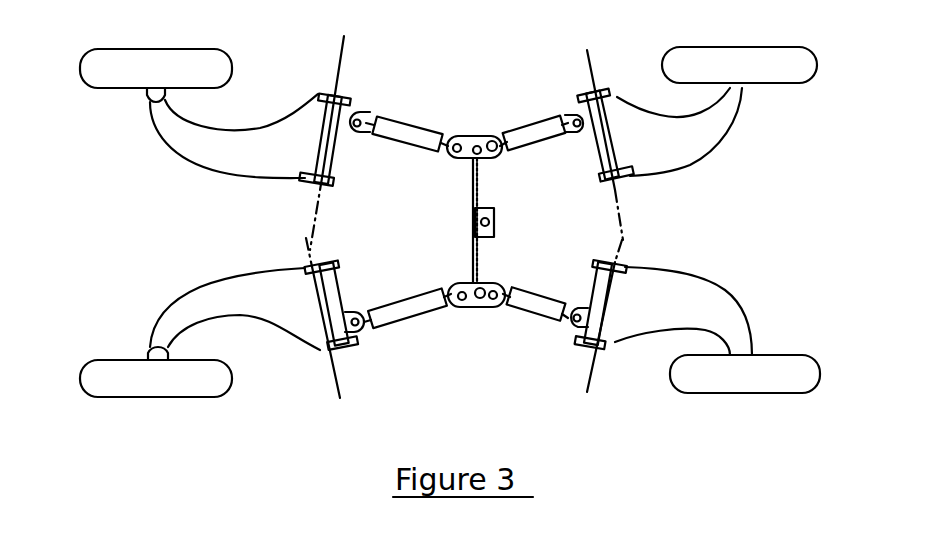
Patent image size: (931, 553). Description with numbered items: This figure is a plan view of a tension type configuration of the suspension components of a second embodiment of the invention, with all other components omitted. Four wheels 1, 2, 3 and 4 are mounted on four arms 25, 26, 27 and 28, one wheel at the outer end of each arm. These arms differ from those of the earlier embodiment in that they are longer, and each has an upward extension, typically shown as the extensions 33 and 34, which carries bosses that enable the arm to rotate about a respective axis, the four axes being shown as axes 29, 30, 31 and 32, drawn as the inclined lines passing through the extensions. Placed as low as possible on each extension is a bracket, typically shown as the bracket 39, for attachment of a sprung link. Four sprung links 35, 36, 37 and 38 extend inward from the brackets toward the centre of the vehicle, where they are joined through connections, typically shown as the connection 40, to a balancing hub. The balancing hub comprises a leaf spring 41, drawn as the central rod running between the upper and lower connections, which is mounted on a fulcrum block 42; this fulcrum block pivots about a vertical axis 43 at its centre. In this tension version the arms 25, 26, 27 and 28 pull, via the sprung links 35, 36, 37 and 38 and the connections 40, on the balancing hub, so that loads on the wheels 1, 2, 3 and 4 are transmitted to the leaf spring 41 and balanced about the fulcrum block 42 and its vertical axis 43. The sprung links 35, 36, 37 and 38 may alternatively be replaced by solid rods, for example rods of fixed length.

The wheel 1 is at (90, 372).
The wheel 2 is at (90, 57).
The wheel 3 is at (793, 55).
The wheel 4 is at (810, 372).
The arm 25 is at (198, 295).
The arm 26 is at (223, 137).
The arm 27 is at (627, 117).
The arm 28 is at (670, 295).
The axis 29 is at (343, 383).
The axis 30 is at (343, 55).
The axis 31 is at (587, 57).
The axis 32 is at (593, 370).
The upward extension 33 is at (328, 355).
The upward extension 34 is at (587, 347).
The sprung link 35 is at (407, 137).
The sprung link 36 is at (530, 132).
The sprung link 37 is at (517, 295).
The sprung link 38 is at (382, 312).
The bracket 39 is at (357, 313).
The connection 40 is at (470, 308).
The leaf spring 41 is at (480, 258).
The fulcrum block 42 is at (494, 210).
The vertical axis 43 is at (495, 222).